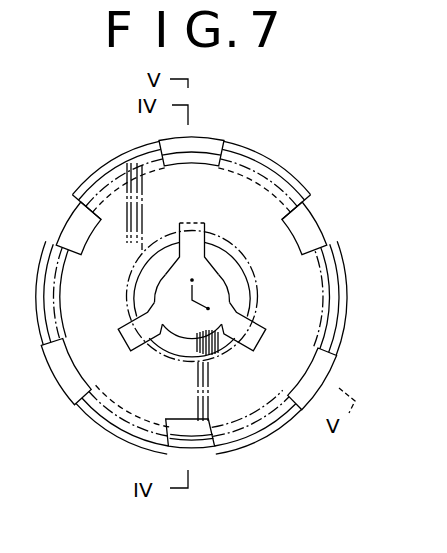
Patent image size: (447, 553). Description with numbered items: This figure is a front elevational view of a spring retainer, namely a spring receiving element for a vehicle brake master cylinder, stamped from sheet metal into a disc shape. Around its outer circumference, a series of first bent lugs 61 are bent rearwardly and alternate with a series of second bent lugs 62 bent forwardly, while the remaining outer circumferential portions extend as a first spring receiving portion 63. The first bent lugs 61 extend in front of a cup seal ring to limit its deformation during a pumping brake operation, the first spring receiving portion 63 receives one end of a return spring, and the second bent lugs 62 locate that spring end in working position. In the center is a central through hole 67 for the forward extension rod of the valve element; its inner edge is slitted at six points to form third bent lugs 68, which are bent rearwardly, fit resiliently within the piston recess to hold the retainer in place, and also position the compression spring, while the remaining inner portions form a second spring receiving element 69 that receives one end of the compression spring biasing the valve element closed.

The first bent lugs 61 is at (284, 176).
The second bent lugs 62 is at (320, 228).
The first spring receiving portion 63 is at (217, 142).
The central through hole 67 is at (172, 330).
The third bent lugs 68 is at (250, 345).
The second spring receiving element 69 is at (238, 262).